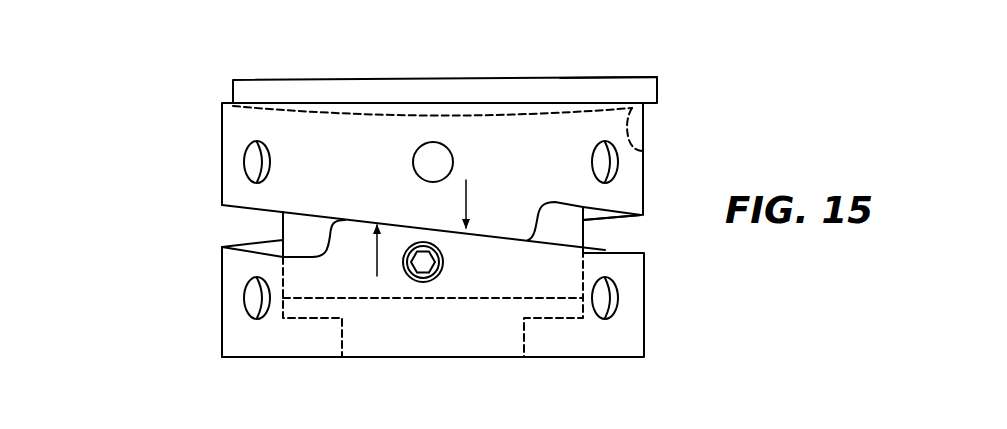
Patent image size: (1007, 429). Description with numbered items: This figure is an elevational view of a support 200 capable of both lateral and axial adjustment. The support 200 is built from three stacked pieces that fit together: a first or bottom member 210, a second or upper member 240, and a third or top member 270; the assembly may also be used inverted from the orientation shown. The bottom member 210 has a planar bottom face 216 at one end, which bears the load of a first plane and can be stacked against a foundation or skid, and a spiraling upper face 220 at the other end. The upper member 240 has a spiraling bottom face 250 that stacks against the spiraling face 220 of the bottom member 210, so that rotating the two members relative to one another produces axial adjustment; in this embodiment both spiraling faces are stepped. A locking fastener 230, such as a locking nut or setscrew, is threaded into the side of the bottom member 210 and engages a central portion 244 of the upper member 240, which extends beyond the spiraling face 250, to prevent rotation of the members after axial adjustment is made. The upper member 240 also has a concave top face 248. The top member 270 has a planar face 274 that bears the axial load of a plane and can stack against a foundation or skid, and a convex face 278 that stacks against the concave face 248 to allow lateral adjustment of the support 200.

The support 200 is at (92, 116).
The bottom member 210 is at (218, 291).
The planar bottom face 216 is at (233, 358).
The spiraling upper face 220 is at (243, 242).
The locking fastener 230 is at (443, 272).
The upper member 240 is at (212, 148).
The central portion 244 is at (483, 298).
The concave top face 248 is at (648, 153).
The spiraling bottom face 250 is at (634, 219).
The top member 270 is at (231, 90).
The planar face 274 is at (648, 76).
The convex face 278 is at (656, 106).